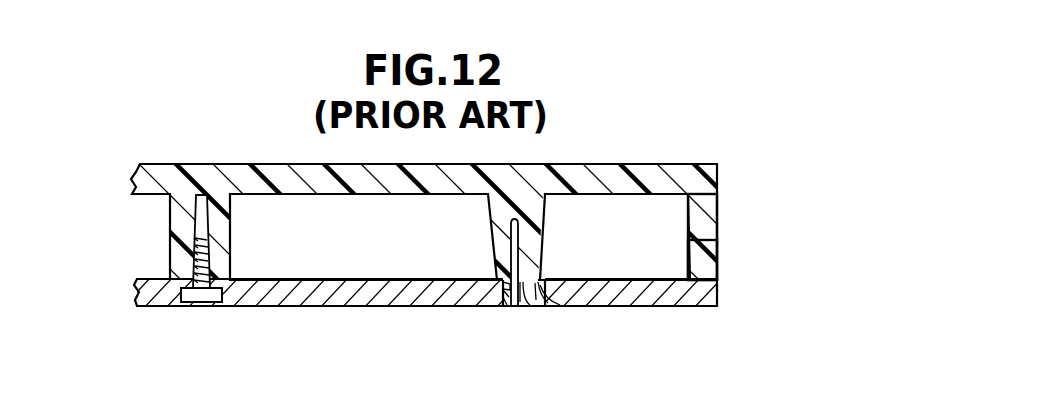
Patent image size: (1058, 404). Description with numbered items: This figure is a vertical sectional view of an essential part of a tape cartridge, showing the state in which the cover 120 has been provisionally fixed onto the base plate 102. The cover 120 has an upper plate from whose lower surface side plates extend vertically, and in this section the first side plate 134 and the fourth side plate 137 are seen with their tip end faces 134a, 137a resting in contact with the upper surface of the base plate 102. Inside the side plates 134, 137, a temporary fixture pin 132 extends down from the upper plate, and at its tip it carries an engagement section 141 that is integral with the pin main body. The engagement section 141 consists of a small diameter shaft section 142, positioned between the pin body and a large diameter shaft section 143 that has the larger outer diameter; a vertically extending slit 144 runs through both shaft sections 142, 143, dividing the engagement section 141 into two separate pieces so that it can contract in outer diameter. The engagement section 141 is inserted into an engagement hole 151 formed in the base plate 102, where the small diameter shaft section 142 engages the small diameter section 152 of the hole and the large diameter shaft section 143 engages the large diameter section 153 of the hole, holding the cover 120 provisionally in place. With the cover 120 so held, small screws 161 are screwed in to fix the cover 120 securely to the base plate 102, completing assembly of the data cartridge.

The cover 120 is at (719, 171).
The base plate 102 is at (694, 296).
The temporary fixture pin 132 is at (478, 233).
The first side plate 134 is at (702, 205).
The fourth side plate 137 is at (748, 237).
The tip end face 134a is at (702, 271).
The tip end face 137a is at (758, 273).
The engagement section 141 is at (540, 312).
The small diameter shaft section 142 is at (535, 299).
The large diameter shaft section 143 is at (545, 301).
The slit 144 is at (531, 304).
The engagement hole 151 is at (501, 304).
The small diameter section 152 is at (499, 285).
The large diameter section 153 is at (503, 292).
The small screw 161 is at (209, 307).